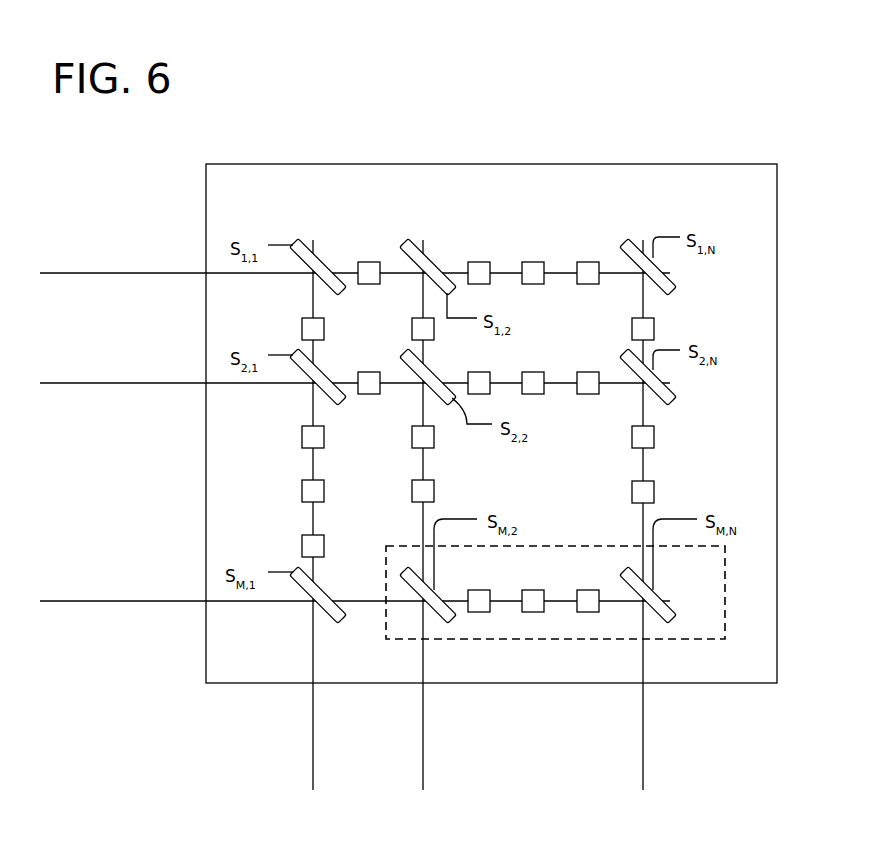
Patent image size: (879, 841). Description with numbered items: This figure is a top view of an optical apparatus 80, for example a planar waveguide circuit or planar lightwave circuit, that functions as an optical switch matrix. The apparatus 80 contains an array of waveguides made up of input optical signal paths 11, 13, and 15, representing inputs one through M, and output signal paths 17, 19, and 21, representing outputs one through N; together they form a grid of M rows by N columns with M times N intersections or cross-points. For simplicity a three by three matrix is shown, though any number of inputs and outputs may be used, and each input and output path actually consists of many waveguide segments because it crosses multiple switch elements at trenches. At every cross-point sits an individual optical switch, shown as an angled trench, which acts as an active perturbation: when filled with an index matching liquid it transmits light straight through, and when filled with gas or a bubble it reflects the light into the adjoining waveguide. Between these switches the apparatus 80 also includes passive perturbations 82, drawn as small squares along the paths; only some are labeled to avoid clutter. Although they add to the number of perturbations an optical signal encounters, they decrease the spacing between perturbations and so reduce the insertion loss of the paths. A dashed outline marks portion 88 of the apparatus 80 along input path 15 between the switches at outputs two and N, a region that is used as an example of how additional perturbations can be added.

The optical apparatus 80 is at (643, 164).
The passive perturbations 82 is at (369, 262).
The portion of the apparatus 88 is at (697, 639).
The input optical signal path 11 is at (123, 273).
The input optical signal path 13 is at (123, 383).
The input optical signal path 15 is at (123, 601).
The output signal path 17 is at (313, 710).
The output signal path 19 is at (423, 710).
The output signal path 21 is at (643, 710).